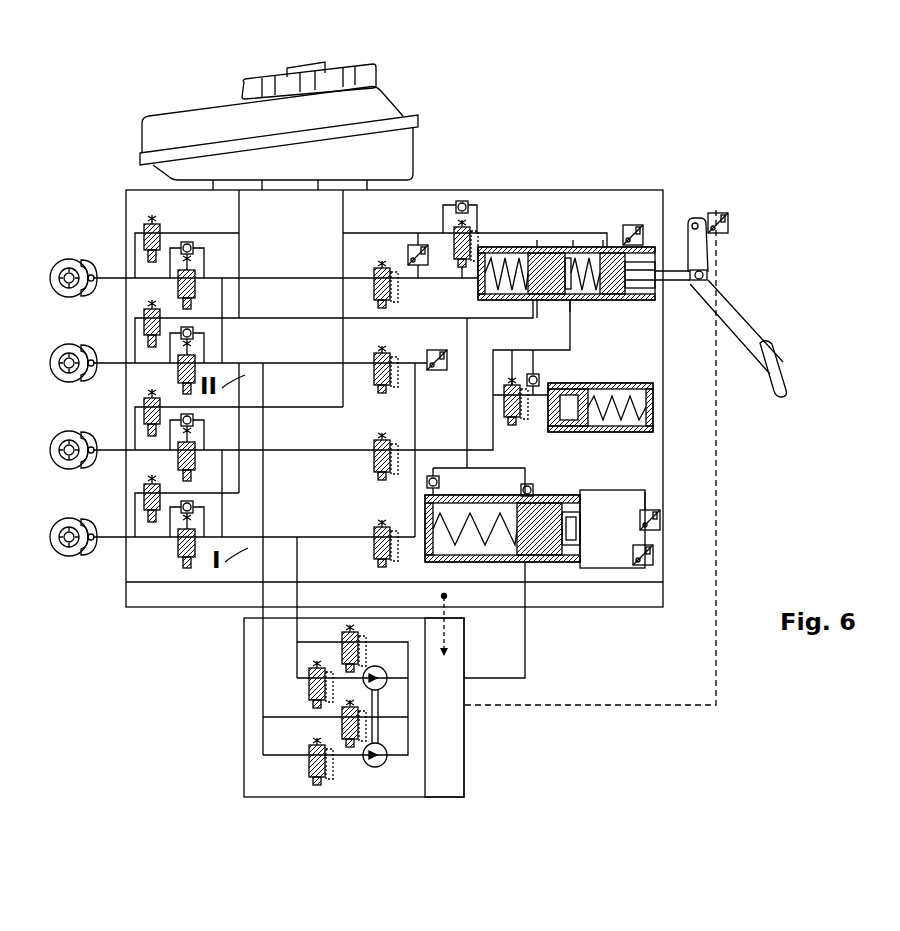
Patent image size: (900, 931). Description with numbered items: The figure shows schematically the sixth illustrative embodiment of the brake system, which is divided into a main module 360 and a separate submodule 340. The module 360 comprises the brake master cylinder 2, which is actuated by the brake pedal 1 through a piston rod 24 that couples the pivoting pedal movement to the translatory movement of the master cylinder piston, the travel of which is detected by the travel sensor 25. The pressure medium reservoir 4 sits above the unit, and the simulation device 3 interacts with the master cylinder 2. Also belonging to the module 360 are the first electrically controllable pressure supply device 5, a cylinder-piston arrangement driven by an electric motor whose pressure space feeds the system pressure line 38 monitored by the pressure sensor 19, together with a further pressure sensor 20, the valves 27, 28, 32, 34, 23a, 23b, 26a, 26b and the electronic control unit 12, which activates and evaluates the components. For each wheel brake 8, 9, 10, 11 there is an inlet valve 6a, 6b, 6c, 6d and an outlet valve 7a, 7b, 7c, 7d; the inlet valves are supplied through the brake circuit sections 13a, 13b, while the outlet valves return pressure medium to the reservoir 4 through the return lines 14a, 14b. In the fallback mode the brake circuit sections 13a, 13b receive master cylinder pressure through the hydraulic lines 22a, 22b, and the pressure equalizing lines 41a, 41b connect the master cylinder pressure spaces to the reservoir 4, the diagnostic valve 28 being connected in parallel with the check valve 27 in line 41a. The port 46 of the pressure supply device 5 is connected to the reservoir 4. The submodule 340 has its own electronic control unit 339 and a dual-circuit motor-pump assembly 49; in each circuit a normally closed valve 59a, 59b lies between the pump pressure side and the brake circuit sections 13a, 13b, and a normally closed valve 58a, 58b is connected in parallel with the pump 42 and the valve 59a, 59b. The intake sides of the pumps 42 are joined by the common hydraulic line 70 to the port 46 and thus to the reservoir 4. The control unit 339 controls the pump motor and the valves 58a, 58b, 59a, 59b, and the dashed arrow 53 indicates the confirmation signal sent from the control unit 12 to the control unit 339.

The brake pedal 1 is at (735, 318).
The hydraulic actuating unit 2 is at (577, 245).
The simulation device 3 is at (605, 372).
The pressure medium reservoir 4 is at (198, 122).
The first electrically controllable pressure supply device 5 is at (640, 480).
The inlet valve 6a is at (177, 288).
The inlet valve 6b is at (177, 373).
The inlet valve 6c is at (177, 460).
The inlet valve 6d is at (177, 547).
The outlet valve 7a is at (145, 246).
The outlet valve 7b is at (145, 330).
The outlet valve 7c is at (145, 414).
The outlet valve 7d is at (145, 500).
The wheel brake 8 is at (112, 282).
The wheel brake 9 is at (109, 368).
The wheel brake 10 is at (106, 462).
The wheel brake 11 is at (106, 553).
The electronic control unit 12 is at (632, 610).
The brake circuit section 13a is at (236, 512).
The brake circuit section 13b is at (240, 336).
The return line 14a is at (349, 207).
The return line 14b is at (247, 208).
The pressure sensor 19 is at (440, 372).
The pressure sensor 20 is at (428, 245).
The hydraulic line 22a is at (503, 450).
The hydraulic line 22b is at (416, 306).
The valve 23a is at (372, 462).
The valve 23b is at (372, 259).
The piston rod 24 is at (680, 282).
The travel sensor 25 is at (645, 220).
The valve 26a is at (372, 550).
The valve 26b is at (372, 392).
The check valve 27 is at (462, 200).
The diagnostic valve 28 is at (460, 268).
The valve 32 is at (522, 378).
The valve 34 is at (545, 375).
The system pressure line 38 is at (417, 415).
The pressure equalizing line 41a is at (520, 233).
The pressure equalizing line 41b is at (260, 316).
The pump 42 is at (378, 666).
The port 46 is at (548, 495).
The motor-pump assembly 49 is at (395, 673).
The dashed arrow 53 is at (452, 630).
The electrically activatable valve 58a is at (337, 657).
The electrically activatable valve 58b is at (338, 735).
The electrically activatable valve 59a is at (305, 695).
The electrically activatable valve 59b is at (305, 770).
The common hydraulic line 70 is at (530, 660).
The electronic control unit 339 is at (455, 745).
The submodule 340 is at (238, 748).
The module 360 is at (632, 186).